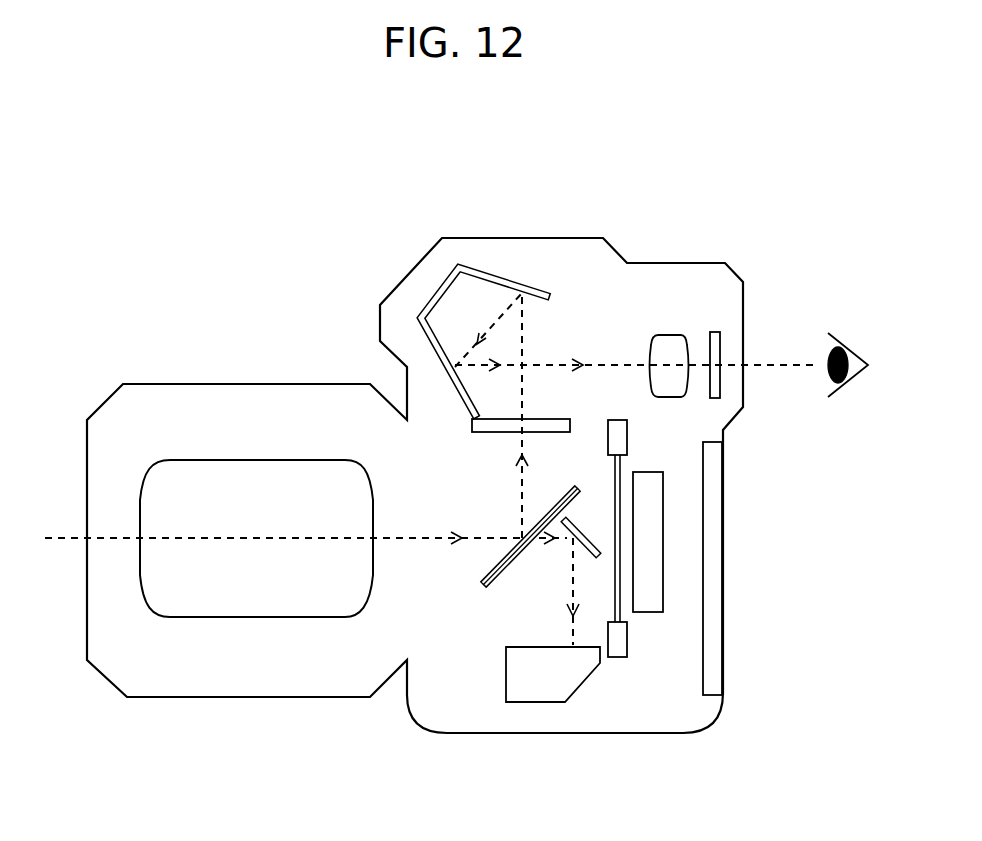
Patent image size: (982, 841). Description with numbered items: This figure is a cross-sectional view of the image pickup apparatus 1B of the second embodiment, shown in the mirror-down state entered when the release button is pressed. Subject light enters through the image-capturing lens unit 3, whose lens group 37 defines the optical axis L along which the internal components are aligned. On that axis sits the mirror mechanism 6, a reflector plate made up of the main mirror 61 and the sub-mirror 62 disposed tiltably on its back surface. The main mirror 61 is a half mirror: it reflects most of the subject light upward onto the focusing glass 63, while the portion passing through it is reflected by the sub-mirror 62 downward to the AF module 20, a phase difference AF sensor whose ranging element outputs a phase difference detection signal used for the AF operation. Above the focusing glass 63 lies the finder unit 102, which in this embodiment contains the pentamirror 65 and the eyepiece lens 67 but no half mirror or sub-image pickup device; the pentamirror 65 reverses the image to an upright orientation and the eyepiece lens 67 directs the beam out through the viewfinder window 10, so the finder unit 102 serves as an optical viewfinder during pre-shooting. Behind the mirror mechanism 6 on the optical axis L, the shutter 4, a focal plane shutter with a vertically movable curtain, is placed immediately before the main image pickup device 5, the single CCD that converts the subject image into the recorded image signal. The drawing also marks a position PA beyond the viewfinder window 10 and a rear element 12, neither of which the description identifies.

The image pickup apparatus 1B is at (150, 200).
The image-capturing lens unit 3 is at (247, 700).
The lens group 37 is at (257, 460).
The optical axis L is at (63, 536).
The pentamirror 65 is at (477, 262).
The finder unit 102 is at (562, 282).
The focusing glass 63 is at (490, 435).
The eyepiece lens 67 is at (668, 335).
The viewfinder window 10 is at (722, 342).
The eye point PA is at (776, 368).
The main mirror 61 is at (488, 568).
The sub-mirror 62 is at (592, 517).
The mirror mechanism 6 is at (476, 598).
The AF module 20 is at (535, 703).
The shutter 4 is at (617, 658).
The main image pickup device 5 is at (650, 472).
The display 12 is at (723, 565).